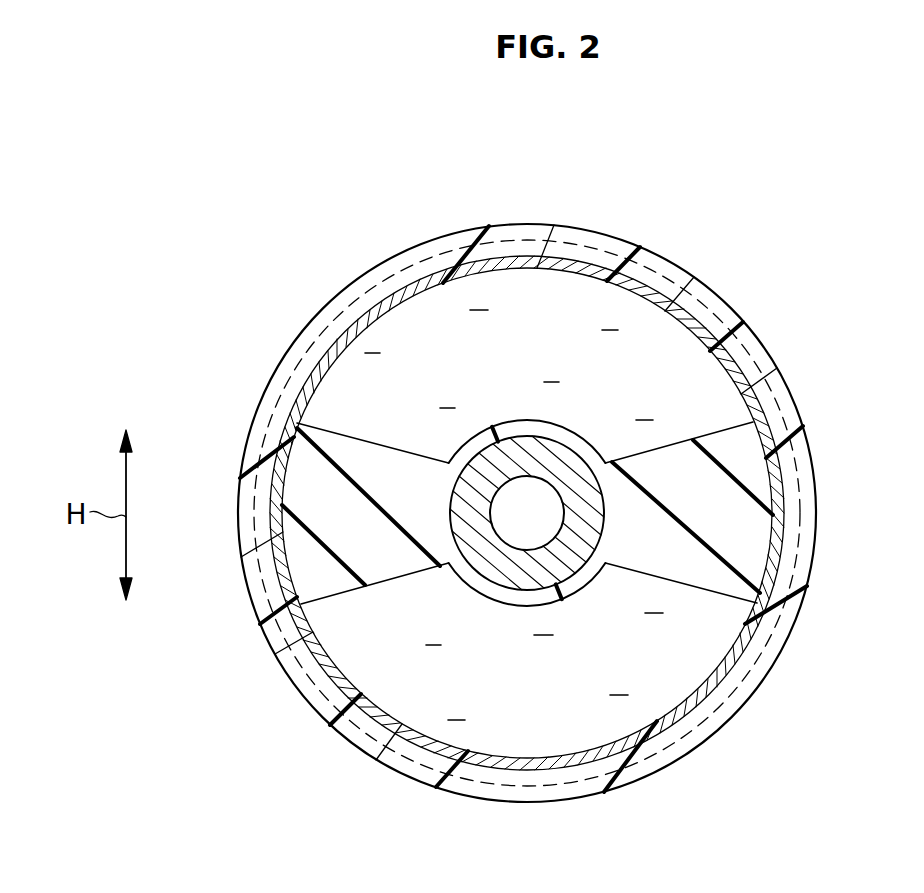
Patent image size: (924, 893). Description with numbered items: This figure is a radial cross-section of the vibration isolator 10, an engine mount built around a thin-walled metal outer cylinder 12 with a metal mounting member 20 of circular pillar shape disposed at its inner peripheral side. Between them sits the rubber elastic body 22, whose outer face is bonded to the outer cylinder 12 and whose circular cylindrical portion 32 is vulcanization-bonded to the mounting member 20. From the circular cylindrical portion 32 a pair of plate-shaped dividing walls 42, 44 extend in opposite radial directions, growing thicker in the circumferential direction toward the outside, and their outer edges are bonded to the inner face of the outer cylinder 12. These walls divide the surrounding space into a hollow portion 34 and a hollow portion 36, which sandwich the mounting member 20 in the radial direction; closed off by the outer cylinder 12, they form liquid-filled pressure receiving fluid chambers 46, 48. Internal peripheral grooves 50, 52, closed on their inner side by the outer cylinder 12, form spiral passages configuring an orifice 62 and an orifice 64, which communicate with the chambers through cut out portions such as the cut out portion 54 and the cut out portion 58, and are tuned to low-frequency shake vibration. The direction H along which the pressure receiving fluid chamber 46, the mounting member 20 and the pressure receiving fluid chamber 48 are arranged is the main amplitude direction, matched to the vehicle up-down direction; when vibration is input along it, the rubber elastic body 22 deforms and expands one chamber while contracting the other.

The vibration isolator 10 is at (805, 252).
The outer cylinder 12 is at (700, 703).
The mounting member 20 is at (575, 443).
The rubber elastic body 22 is at (387, 448).
The circular cylindrical portion 32 is at (511, 423).
The hollow portion 34 is at (753, 414).
The hollow portion 36 is at (287, 648).
The dividing wall 42 is at (401, 560).
The dividing wall 44 is at (681, 453).
The pressure receiving fluid chamber 46 is at (527, 302).
The pressure receiving fluid chamber 48 is at (537, 708).
The internal peripheral groove 50 is at (367, 293).
The internal peripheral groove 52 is at (398, 738).
The cut out portion 54 is at (310, 378).
The cut out portion 58 is at (758, 648).
The orifice 62 is at (657, 277).
The orifice 64 is at (587, 790).